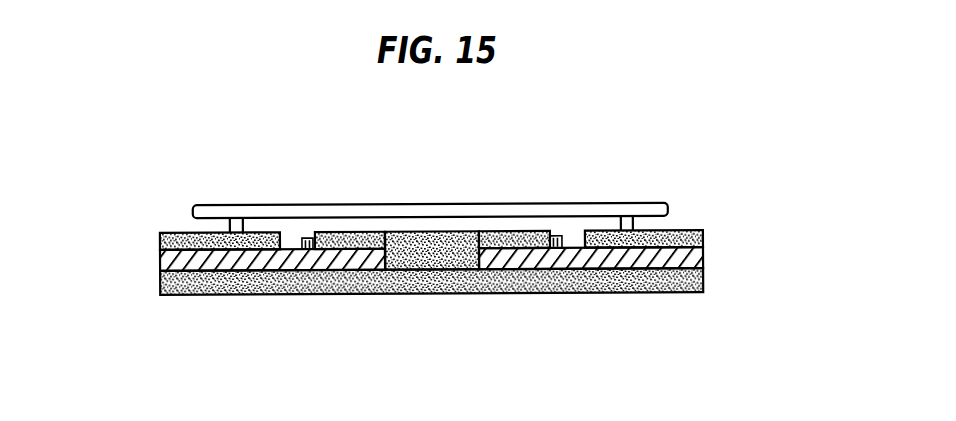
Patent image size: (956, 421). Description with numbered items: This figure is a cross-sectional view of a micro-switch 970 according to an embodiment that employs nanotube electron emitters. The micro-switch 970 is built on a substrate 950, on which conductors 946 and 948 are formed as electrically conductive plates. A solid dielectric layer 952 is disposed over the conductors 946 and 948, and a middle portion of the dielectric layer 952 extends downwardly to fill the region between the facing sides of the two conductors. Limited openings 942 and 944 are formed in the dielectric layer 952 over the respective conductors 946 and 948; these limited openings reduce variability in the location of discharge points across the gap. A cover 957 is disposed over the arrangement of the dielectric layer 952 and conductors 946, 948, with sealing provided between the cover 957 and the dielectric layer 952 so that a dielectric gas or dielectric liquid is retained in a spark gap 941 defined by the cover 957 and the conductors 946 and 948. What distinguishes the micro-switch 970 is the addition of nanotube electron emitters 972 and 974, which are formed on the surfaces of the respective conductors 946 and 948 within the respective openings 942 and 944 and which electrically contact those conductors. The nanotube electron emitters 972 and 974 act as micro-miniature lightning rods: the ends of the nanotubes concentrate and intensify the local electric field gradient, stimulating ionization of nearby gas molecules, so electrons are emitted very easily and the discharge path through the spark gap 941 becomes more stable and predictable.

The spark gap 941 is at (416, 222).
The limited opening 942 is at (288, 229).
The limited opening 944 is at (579, 226).
The conductor 946 is at (160, 260).
The conductor 948 is at (705, 258).
The substrate 950 is at (705, 278).
The solid dielectric layer 952 is at (705, 234).
The cover 957 is at (668, 208).
The micro-switch 970 is at (478, 153).
The nanotube electron emitter 972 is at (307, 238).
The nanotube electron emitter 974 is at (560, 234).